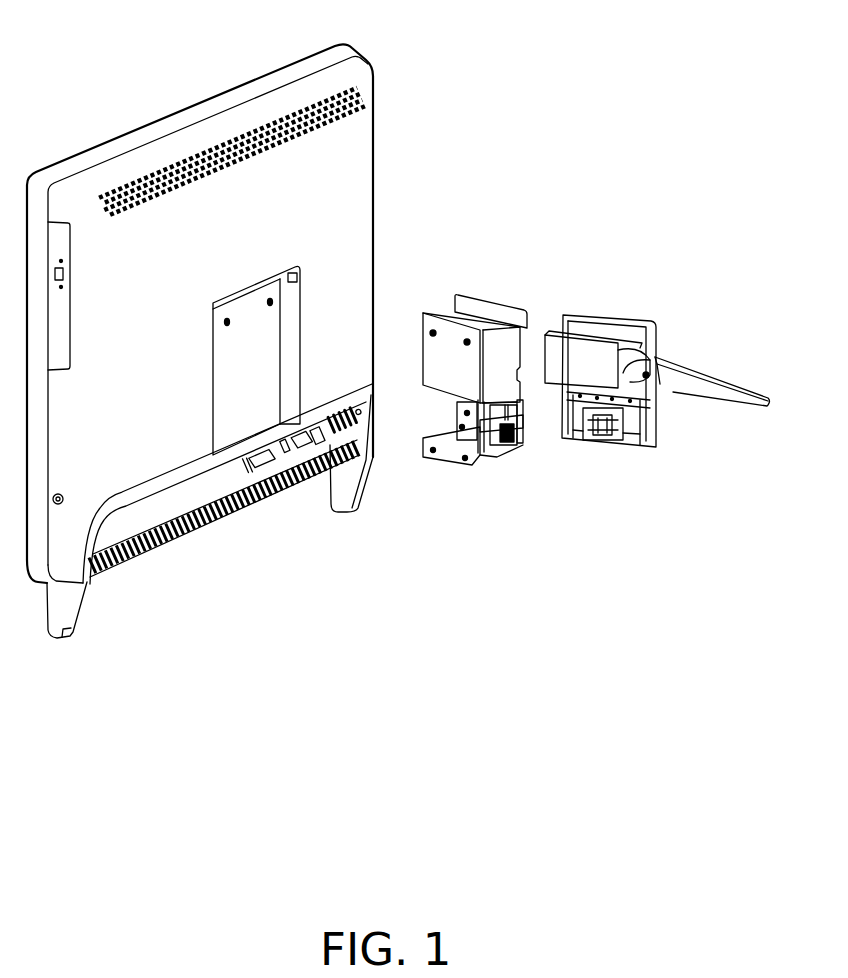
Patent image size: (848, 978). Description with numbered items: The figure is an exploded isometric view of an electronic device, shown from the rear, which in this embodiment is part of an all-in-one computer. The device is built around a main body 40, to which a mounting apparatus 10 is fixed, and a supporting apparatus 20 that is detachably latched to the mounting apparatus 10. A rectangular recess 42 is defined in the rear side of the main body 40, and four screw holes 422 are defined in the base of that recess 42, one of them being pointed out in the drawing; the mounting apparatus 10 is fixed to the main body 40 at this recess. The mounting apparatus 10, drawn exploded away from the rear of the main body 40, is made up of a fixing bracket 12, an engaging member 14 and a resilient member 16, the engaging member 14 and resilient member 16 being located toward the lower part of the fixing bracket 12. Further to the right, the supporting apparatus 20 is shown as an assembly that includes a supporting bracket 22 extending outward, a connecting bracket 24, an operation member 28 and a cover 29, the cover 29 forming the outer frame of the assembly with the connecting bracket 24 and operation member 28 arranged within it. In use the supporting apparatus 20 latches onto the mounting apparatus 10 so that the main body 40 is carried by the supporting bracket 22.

The main body 40 is at (255, 86).
The rectangular recess 42 is at (215, 393).
The screw holes 422 is at (274, 303).
The mounting apparatus 10 is at (507, 347).
The fixing bracket 12 is at (482, 308).
The engaging member 14 is at (478, 448).
The resilient member 16 is at (512, 447).
The supporting apparatus 20 is at (660, 359).
The supporting bracket 22 is at (697, 380).
The connecting bracket 24 is at (556, 345).
The operation member 28 is at (610, 446).
The cover 29 is at (633, 328).